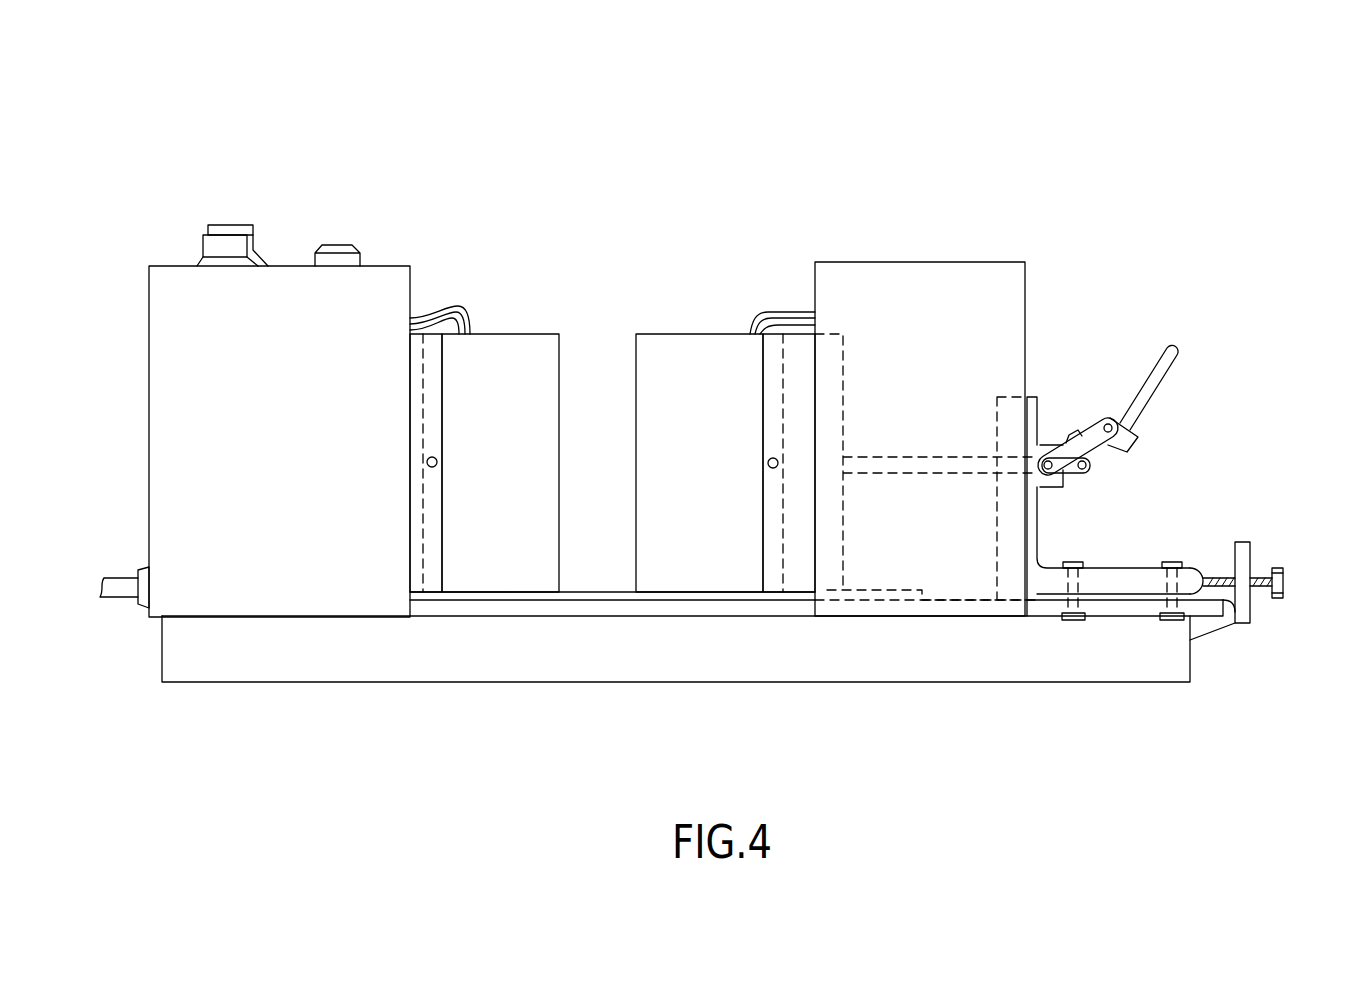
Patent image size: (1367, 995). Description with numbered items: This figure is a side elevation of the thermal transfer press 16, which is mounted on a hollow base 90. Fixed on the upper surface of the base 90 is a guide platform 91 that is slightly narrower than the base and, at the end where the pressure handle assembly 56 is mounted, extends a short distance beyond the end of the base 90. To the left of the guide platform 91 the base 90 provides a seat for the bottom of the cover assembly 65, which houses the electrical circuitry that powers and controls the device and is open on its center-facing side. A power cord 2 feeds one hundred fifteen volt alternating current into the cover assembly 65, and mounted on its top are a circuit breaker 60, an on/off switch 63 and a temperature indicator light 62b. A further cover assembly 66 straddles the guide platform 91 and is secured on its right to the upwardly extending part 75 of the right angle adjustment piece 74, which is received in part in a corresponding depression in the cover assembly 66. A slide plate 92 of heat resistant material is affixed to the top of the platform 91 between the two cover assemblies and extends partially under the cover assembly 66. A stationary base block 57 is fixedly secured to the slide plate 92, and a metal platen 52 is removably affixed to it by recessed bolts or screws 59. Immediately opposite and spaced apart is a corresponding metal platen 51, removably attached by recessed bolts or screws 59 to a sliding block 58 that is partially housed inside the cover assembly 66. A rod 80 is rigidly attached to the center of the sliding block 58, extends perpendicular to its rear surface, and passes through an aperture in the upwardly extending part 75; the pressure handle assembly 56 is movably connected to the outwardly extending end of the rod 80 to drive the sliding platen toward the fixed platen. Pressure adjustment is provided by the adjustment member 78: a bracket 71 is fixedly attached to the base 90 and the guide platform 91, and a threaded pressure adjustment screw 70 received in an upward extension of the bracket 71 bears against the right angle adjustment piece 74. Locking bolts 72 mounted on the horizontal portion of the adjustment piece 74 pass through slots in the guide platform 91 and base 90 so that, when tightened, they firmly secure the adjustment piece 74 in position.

The power cord 2 is at (132, 575).
The thermal transfer press 16 is at (636, 227).
The metal platen 51 is at (715, 424).
The metal platen 52 is at (513, 424).
The pressure handle assembly 56 is at (1172, 418).
The base block 57 is at (432, 575).
The sliding block 58 is at (797, 575).
The recessed bolts or screws 59 is at (437, 466).
The circuit breaker 60 is at (228, 232).
The temperature indicator light 62b is at (342, 252).
The on/off switch 63 is at (215, 245).
The cover assembly 65 is at (298, 372).
The cover assembly 66 is at (938, 371).
The pressure adjustment screw 70 is at (1285, 582).
The bracket 71 is at (1245, 545).
The locking bolts 72 is at (1170, 560).
The right angle adjustment piece 74 is at (1188, 580).
The upwardly extending part 75 is at (1032, 405).
The adjustment member 78 is at (1277, 555).
The rod 80 is at (935, 473).
The hollow base 90 is at (1008, 665).
The guide platform 91 is at (1200, 607).
The slide plate 92 is at (580, 590).